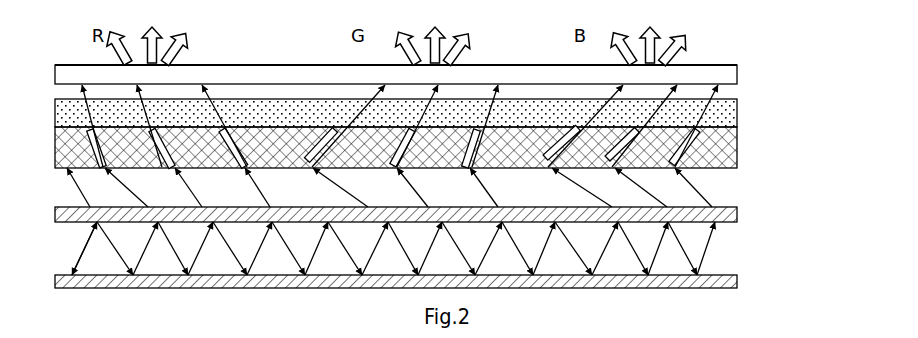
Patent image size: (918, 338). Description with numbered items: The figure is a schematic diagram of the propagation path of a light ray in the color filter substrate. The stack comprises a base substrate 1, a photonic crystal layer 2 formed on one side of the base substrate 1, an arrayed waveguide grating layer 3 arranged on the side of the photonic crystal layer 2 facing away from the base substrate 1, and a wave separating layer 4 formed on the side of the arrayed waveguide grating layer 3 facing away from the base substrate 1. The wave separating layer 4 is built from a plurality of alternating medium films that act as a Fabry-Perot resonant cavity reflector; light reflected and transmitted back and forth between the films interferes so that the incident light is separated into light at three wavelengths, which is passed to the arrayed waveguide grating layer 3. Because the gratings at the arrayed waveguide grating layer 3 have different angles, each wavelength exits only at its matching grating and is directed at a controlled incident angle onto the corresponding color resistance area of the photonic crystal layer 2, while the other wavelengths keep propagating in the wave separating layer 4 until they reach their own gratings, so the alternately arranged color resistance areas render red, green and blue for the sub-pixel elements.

The base substrate 1 is at (737, 78).
The photonic crystal layer 2 is at (737, 114).
The arrayed waveguide grating layer 3 is at (737, 149).
The wave separating layer 4 is at (737, 208).